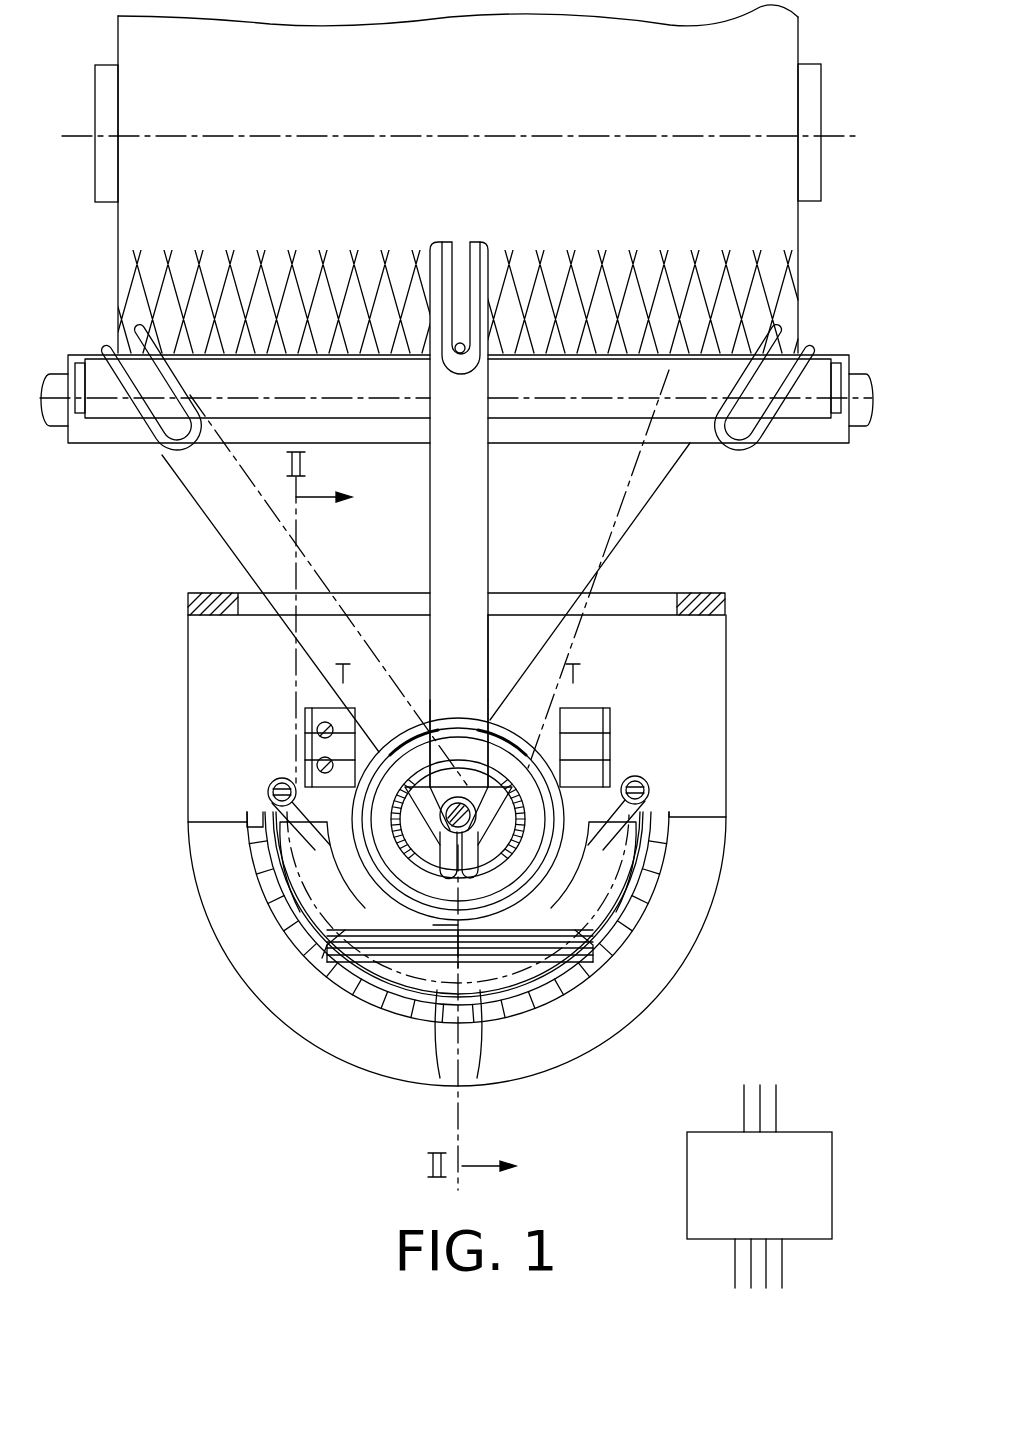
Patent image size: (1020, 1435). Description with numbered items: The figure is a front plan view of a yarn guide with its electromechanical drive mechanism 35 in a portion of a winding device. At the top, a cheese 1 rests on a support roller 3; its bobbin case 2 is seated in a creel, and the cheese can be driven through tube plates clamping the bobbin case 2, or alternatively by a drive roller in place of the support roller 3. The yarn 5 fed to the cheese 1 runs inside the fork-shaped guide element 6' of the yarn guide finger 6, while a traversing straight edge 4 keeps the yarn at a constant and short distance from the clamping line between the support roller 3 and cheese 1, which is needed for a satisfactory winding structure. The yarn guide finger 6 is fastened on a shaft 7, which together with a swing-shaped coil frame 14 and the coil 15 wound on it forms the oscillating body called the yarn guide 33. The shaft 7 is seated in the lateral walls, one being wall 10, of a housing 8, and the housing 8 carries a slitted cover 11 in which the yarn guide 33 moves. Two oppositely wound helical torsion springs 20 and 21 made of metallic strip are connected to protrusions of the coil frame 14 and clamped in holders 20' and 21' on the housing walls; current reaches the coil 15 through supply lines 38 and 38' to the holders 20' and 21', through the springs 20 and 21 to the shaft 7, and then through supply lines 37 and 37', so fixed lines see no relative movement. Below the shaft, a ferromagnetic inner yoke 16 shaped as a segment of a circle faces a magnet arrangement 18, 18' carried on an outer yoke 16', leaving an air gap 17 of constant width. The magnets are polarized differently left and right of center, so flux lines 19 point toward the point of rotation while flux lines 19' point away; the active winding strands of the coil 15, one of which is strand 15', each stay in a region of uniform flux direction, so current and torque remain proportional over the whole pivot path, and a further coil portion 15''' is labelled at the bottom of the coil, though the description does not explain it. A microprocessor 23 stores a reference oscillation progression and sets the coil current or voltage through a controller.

The cheese 1 is at (770, 197).
The bobbin case 2 is at (808, 80).
The support roller 3 is at (815, 427).
The traversing straight edge 4 is at (697, 367).
The yarn 5 is at (470, 352).
The yarn guide finger 6 is at (491, 514).
The fork-shaped guide element 6' is at (487, 279).
The shaft 7 is at (497, 690).
The housing 8 is at (758, 639).
The lateral wall 10 is at (722, 690).
The cover 11 is at (546, 605).
The coil frame 14 is at (625, 842).
The coil 15 is at (431, 938).
The winding strand 15' is at (661, 957).
The band clamp 15''' is at (472, 1025).
The inner yoke 16 is at (251, 825).
The outer yoke 16' is at (629, 952).
The air gap 17 is at (648, 862).
The magnets 18 is at (616, 950).
The magnets 18' is at (298, 946).
The magnetic flux lines 19 is at (519, 1056).
The magnetic flux lines 19' is at (407, 1056).
The helical spring 20 is at (269, 789).
The holder 20' is at (286, 728).
The helical spring 21 is at (649, 799).
The holder 21' is at (624, 747).
The microprocessor 23 is at (744, 1196).
The yarn guide 33 is at (491, 628).
The drive mechanism 35 is at (724, 586).
The supply line 37 is at (542, 933).
The supply line 37' is at (241, 944).
The supply line 38 is at (619, 662).
The supply line 38' is at (290, 656).